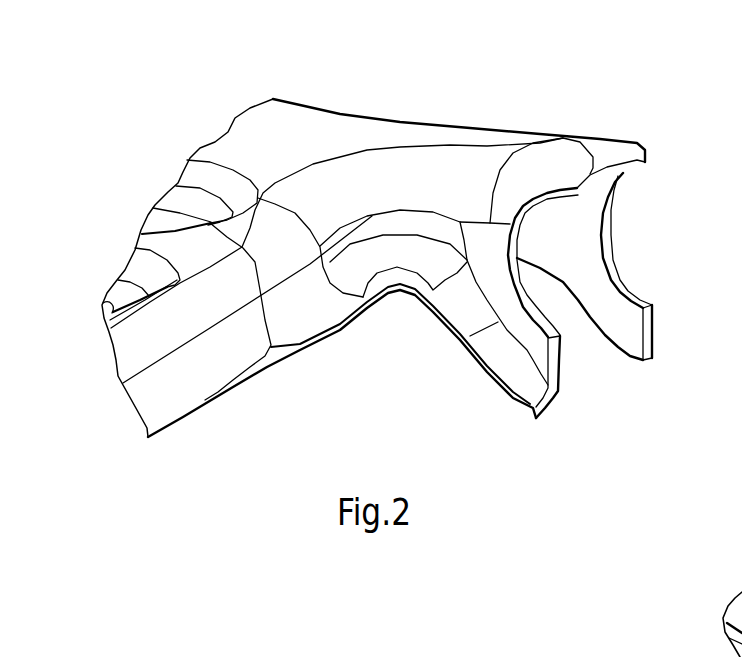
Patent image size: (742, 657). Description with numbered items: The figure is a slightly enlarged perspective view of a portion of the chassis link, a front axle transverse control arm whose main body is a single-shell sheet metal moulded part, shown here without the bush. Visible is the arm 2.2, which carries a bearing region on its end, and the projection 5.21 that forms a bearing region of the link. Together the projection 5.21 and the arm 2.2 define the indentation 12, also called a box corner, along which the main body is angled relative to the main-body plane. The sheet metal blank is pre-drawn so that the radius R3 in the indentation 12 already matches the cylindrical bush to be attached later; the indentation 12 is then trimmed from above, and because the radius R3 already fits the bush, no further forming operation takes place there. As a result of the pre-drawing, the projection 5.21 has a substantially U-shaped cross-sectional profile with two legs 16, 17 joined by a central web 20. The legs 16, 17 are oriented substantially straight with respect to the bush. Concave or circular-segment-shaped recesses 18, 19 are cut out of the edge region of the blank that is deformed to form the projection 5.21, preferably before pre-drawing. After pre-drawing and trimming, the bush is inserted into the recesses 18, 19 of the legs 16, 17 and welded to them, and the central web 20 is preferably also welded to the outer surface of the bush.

The arm 2.2 is at (173, 393).
The indentation 12 is at (400, 225).
The projection 5.21 is at (573, 168).
The central web 20 is at (613, 150).
The recess 18 is at (608, 225).
The recess 19 is at (527, 307).
The leg 17 is at (625, 335).
The leg 16 is at (538, 347).
The radius R3 is at (507, 362).